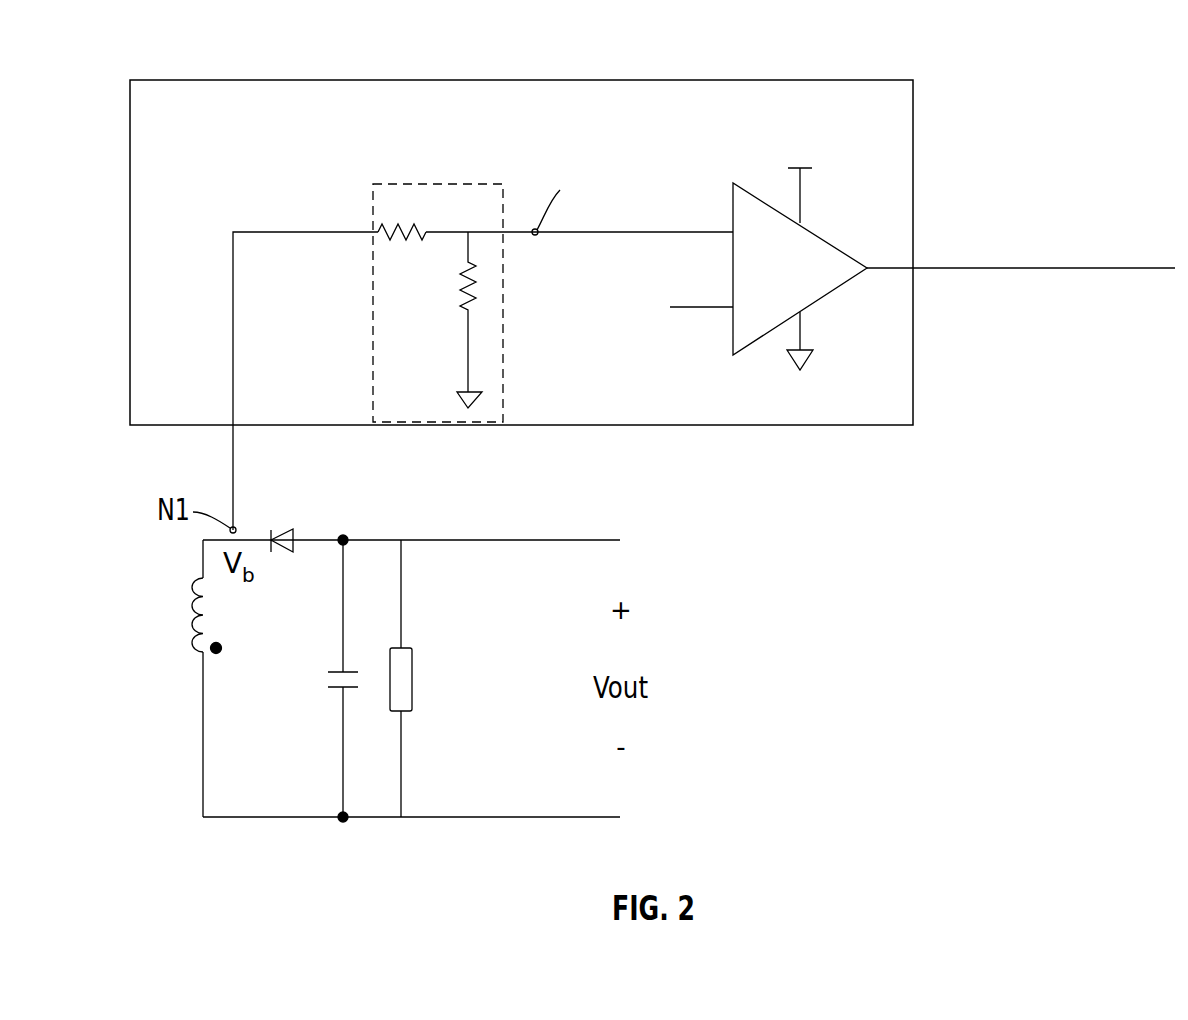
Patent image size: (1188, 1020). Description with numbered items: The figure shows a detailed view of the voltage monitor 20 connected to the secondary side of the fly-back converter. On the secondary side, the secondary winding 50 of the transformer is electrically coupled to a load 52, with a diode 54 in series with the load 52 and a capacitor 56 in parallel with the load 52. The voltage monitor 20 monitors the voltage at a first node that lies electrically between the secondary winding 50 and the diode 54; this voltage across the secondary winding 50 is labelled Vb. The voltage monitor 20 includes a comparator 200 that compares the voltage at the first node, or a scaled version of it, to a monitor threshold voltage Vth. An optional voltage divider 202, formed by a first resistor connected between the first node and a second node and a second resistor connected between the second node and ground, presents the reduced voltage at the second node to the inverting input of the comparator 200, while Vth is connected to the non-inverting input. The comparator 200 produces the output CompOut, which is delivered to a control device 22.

The voltage monitor 20 is at (560, 305).
The control device output 22 is at (1120, 270).
The comparator 200 is at (817, 298).
The voltage divider 202 is at (437, 184).
The secondary winding 50 is at (199, 617).
The load 52 is at (412, 675).
The diode 54 is at (283, 532).
The capacitor 56 is at (343, 723).